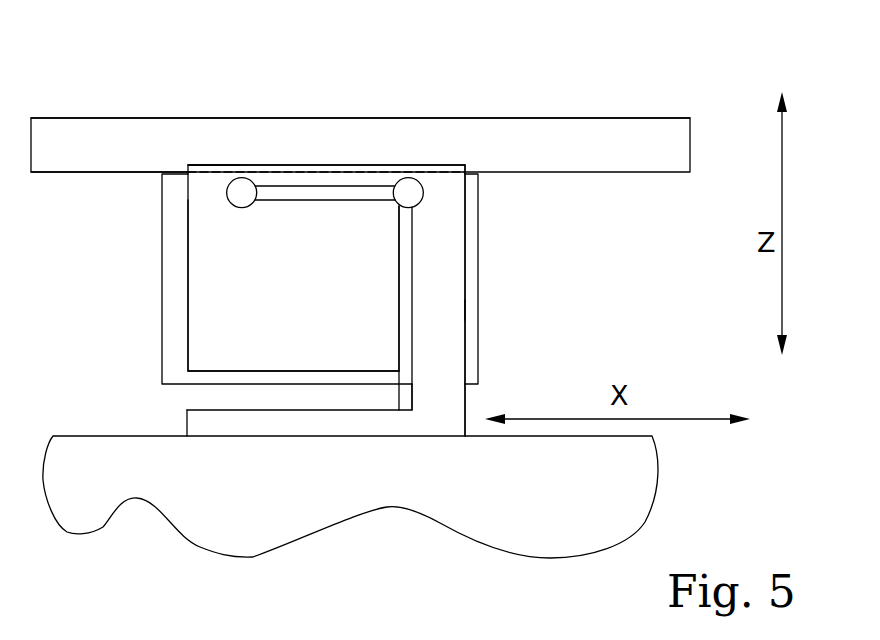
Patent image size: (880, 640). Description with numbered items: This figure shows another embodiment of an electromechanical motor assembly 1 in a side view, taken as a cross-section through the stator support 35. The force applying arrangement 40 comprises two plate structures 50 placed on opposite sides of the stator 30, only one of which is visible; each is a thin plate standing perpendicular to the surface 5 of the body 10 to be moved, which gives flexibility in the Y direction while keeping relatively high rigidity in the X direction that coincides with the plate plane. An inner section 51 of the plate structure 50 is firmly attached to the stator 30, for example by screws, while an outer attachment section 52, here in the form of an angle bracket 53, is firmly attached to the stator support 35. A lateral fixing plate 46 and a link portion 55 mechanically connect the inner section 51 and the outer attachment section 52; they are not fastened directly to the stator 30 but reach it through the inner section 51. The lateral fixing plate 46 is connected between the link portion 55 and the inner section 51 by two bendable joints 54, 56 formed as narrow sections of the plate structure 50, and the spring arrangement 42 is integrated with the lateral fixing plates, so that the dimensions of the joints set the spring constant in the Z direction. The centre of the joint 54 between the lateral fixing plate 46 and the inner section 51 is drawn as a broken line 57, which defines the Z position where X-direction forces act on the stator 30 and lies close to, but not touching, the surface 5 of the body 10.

The electromechanical motor assembly 1 is at (600, 89).
The surface of the body to be moved 5 is at (65, 173).
The body to be moved 10 is at (91, 137).
The stator 30 is at (173, 321).
The stator support 35 is at (67, 497).
The force applying arrangement 40 is at (570, 308).
The spring arrangement 42 is at (437, 89).
The lateral fixing plate 46 is at (287, 177).
The plate structure 50 is at (448, 288).
The inner section 51 is at (255, 258).
The outer attachment section 52 is at (340, 425).
The angle bracket 53 is at (245, 425).
The bendable joint 54 is at (232, 168).
The link portion 55 is at (453, 238).
The bendable joint 56 is at (398, 167).
The broken line 57 is at (208, 170).